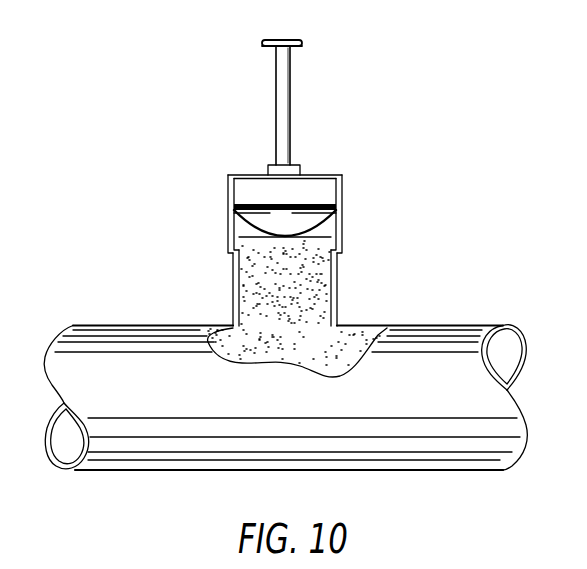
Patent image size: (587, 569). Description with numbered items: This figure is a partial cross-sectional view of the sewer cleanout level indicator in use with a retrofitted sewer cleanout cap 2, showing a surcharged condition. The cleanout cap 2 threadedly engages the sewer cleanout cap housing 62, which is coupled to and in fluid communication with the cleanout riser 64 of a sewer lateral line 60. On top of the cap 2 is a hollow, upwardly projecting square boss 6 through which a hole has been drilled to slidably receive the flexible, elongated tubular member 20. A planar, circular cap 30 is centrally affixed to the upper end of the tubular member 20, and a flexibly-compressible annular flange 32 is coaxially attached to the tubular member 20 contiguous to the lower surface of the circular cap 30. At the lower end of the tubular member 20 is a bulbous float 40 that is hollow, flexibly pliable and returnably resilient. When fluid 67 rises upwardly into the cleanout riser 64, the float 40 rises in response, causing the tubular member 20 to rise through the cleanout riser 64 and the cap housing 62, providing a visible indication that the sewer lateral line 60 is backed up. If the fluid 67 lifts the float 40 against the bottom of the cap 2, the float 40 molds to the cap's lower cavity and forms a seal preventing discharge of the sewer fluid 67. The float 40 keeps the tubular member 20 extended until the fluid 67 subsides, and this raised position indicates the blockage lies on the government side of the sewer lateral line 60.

The sewer cleanout cap 2 is at (242, 175).
The square boss 6 is at (299, 166).
The tubular member 20 is at (290, 118).
The circular cap 30 is at (287, 40).
The annular flange 32 is at (294, 47).
The bulbous float 40 is at (339, 214).
The sewer lateral line 60 is at (118, 325).
The sewer cleanout cap housing 62 is at (343, 250).
The cleanout riser 64 is at (338, 301).
The fluid 67 is at (238, 261).